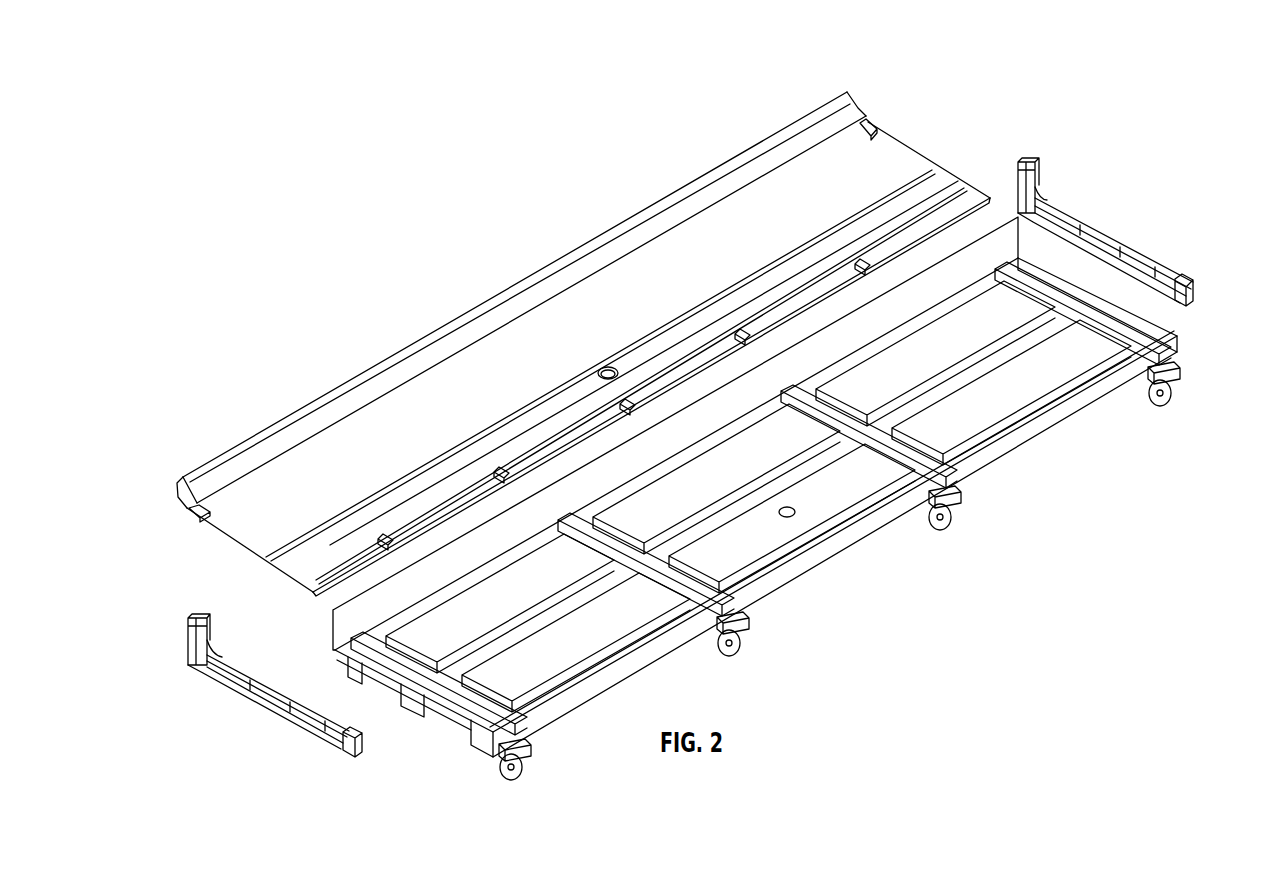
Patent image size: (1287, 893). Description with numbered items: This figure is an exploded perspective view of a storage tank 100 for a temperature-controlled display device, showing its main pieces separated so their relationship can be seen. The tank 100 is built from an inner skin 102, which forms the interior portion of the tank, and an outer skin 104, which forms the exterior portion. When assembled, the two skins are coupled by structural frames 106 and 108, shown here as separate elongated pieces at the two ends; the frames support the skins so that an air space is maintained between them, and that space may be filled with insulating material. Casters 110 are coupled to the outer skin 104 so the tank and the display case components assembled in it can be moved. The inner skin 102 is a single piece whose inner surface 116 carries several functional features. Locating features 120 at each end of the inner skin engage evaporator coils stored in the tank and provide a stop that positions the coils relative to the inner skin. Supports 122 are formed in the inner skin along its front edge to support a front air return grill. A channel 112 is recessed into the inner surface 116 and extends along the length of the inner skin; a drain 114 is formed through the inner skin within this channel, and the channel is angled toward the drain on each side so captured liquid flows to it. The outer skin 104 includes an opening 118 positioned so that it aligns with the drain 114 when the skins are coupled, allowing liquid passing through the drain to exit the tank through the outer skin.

The storage tank 100 is at (1218, 280).
The inner skin 102 is at (528, 259).
The outer skin 104 is at (784, 593).
The structural frame 106 is at (249, 707).
The structural frame 108 is at (1186, 312).
The casters 110 is at (963, 510).
The channel 112 is at (780, 277).
The drain 114 is at (605, 367).
The inner surface 116 is at (680, 260).
The opening 118 is at (785, 508).
The locating features 120 is at (181, 477).
The supports 122 is at (385, 537).